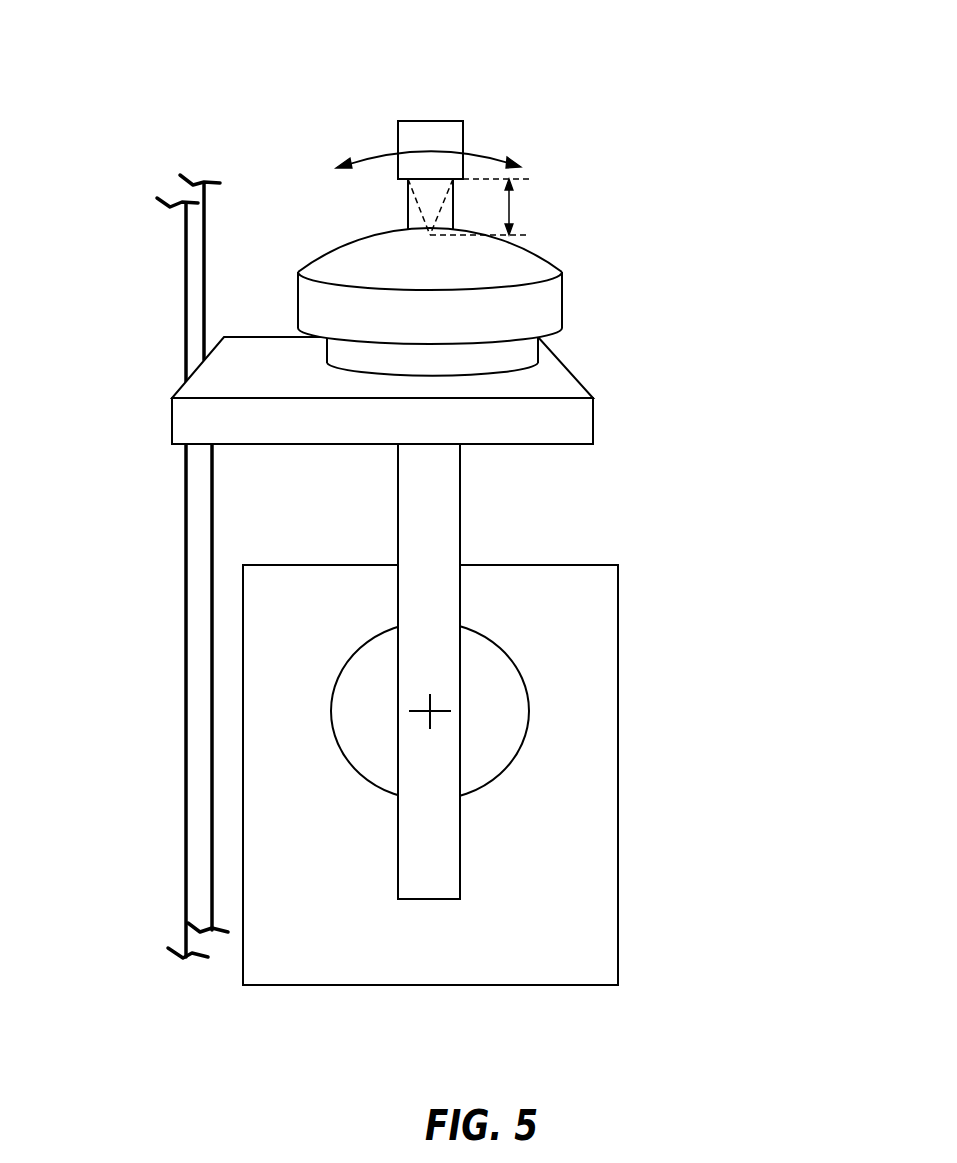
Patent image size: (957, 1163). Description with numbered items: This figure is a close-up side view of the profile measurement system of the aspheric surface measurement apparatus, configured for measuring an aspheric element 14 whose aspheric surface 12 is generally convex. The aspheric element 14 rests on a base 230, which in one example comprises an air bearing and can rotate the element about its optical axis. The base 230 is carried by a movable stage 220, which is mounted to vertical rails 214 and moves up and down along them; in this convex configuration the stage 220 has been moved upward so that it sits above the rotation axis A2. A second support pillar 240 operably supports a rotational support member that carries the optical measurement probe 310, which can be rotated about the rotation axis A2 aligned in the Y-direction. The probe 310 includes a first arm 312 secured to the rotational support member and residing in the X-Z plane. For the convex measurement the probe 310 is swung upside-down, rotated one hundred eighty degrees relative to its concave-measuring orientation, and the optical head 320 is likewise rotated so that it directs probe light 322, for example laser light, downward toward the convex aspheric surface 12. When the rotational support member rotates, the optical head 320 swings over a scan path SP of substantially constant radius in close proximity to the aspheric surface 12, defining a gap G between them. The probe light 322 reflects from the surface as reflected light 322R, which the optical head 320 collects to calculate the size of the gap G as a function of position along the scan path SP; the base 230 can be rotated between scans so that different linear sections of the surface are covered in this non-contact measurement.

The aspheric surface 12 is at (530, 267).
The aspheric element 14 is at (563, 289).
The vertical rails 214 is at (204, 267).
The movable stage 220 is at (593, 421).
The base 230 is at (525, 353).
The second support pillar 240 is at (618, 582).
The optical measurement probe 310 is at (439, 671).
The first arm 312 is at (413, 515).
The optical head 320 is at (425, 120).
The probe light 322 is at (262, 175).
The reflected light 322R is at (408, 212).
The rotation axis A2 is at (432, 712).
The gap G is at (510, 207).
The scan path SP is at (486, 156).